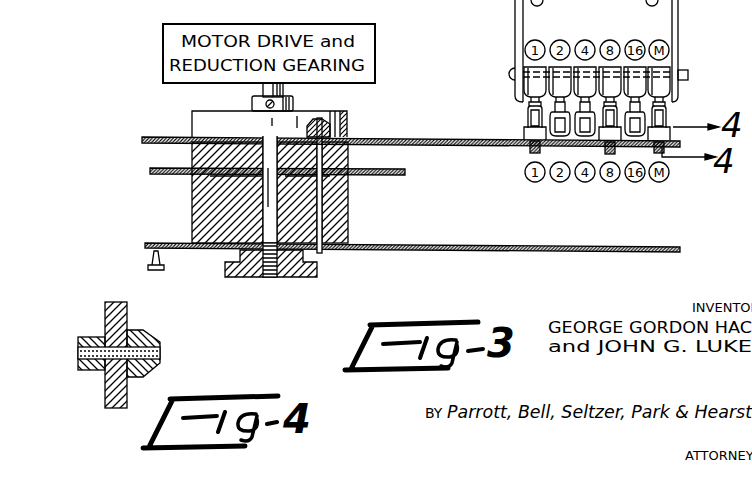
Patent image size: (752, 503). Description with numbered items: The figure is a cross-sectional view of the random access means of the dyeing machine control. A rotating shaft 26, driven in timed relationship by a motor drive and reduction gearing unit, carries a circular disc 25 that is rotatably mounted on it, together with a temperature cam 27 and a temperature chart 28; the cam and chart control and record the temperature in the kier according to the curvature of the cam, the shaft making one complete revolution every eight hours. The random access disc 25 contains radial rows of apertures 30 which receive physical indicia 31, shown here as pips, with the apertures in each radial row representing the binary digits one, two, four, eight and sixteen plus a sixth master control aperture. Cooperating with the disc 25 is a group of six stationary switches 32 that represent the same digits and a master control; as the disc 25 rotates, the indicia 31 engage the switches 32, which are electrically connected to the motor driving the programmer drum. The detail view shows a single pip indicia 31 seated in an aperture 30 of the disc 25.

In FIG. 3, the circular disc 25 is at (437, 157).
In FIG. 4, the circular disc 25 is at (113, 292).
In FIG. 3, the rotating shaft 26 is at (268, 277).
In FIG. 3, the temperature cam 27 is at (405, 175).
In FIG. 3, the temperature chart 28 is at (385, 252).
In FIG. 3, the apertures 30 is at (586, 148).
In FIG. 4, the apertures 30 is at (94, 347).
In FIG. 3, the physical indicia 31 is at (527, 133).
In FIG. 4, the physical indicia 31 is at (145, 334).
In FIG. 3, the switches 32 is at (558, 80).